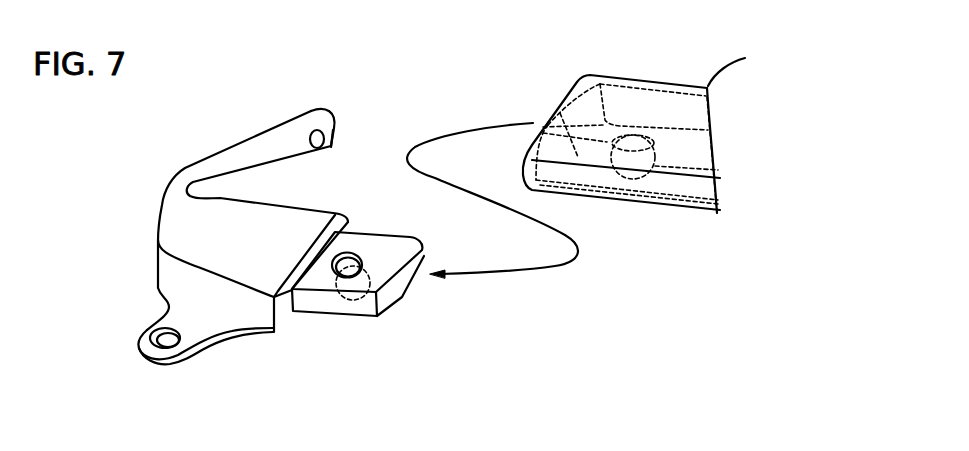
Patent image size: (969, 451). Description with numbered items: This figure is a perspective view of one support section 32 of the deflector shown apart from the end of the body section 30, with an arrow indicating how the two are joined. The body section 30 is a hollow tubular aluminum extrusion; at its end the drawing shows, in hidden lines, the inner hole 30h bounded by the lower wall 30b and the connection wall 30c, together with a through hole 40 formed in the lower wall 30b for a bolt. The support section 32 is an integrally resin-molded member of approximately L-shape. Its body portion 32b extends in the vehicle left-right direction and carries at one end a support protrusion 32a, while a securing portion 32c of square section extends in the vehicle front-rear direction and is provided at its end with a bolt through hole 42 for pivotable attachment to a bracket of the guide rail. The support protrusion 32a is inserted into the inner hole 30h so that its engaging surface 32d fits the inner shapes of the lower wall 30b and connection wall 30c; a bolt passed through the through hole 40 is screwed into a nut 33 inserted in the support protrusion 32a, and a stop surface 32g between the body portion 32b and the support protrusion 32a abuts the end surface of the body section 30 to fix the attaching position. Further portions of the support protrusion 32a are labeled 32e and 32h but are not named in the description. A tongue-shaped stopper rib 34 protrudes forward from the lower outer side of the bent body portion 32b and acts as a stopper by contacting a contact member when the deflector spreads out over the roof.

The body section 30 is at (683, 95).
The inner hole 30h is at (550, 115).
The lower wall 30b is at (672, 182).
The connection wall 30c is at (688, 208).
The through hole 40 is at (633, 180).
The support section 32 is at (175, 212).
The support protrusion 32a is at (348, 308).
The body portion 32b is at (193, 250).
The securing portion 32c is at (300, 157).
The engaging surface 32d is at (398, 295).
The upper surface of bracket 32 32e is at (382, 243).
The stop surface 32g is at (280, 311).
The arm portion 32h is at (233, 149).
The nut 33 is at (353, 252).
The stopper rib 34 is at (143, 340).
The bolt through hole 42 is at (325, 140).